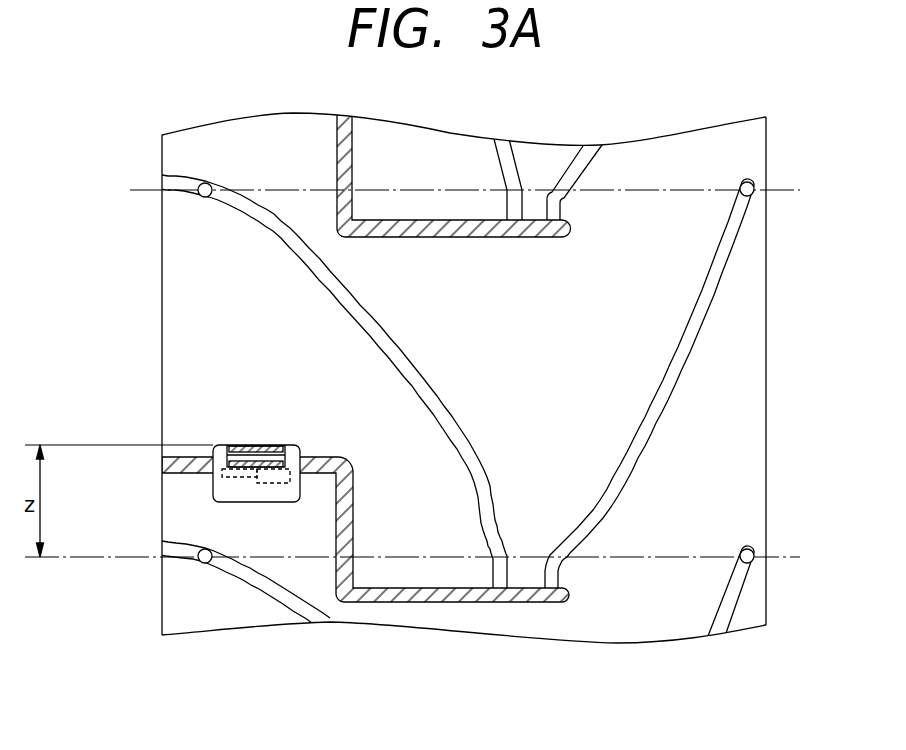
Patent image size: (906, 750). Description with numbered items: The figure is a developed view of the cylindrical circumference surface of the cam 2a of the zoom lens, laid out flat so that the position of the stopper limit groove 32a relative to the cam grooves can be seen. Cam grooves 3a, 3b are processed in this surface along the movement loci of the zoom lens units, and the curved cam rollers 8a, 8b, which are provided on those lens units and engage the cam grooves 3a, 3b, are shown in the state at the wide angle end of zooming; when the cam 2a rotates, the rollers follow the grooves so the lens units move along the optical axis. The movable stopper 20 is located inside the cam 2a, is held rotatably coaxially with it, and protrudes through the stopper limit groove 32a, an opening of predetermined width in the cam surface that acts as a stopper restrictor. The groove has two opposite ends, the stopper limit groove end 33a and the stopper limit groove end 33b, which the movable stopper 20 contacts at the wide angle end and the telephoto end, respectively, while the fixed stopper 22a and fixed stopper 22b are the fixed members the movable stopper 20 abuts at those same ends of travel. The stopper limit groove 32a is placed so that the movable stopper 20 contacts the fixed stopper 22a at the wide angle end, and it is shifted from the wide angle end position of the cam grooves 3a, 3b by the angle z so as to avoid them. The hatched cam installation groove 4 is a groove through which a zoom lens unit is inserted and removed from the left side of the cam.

The cam 2a is at (250, 125).
The cam groove 3a is at (348, 280).
The cam groove 3b is at (702, 307).
The cam installation groove 4 is at (397, 597).
The curved cam roller 8a is at (203, 183).
The curved cam roller 8b is at (753, 176).
The movable stopper 20 is at (225, 445).
The fixed stopper 22a is at (243, 476).
The fixed stopper 22b is at (278, 480).
The stopper limit groove 32a is at (220, 490).
The stopper limit groove end 33a is at (293, 445).
The stopper limit groove end 33b is at (237, 503).